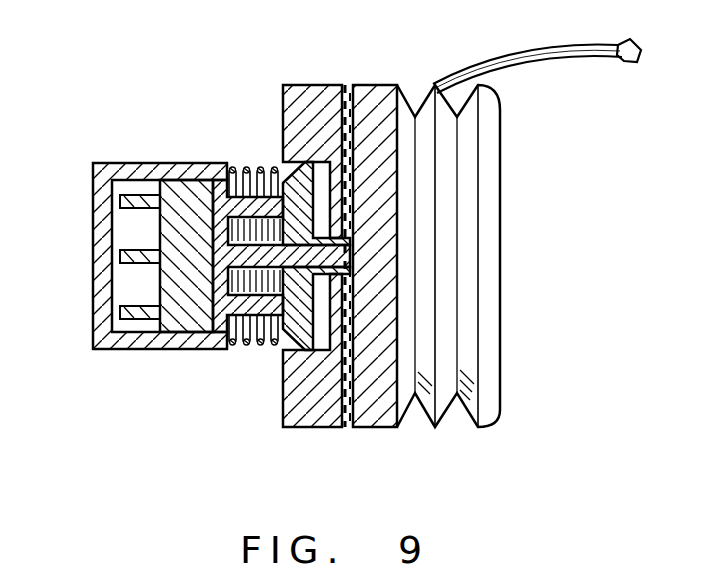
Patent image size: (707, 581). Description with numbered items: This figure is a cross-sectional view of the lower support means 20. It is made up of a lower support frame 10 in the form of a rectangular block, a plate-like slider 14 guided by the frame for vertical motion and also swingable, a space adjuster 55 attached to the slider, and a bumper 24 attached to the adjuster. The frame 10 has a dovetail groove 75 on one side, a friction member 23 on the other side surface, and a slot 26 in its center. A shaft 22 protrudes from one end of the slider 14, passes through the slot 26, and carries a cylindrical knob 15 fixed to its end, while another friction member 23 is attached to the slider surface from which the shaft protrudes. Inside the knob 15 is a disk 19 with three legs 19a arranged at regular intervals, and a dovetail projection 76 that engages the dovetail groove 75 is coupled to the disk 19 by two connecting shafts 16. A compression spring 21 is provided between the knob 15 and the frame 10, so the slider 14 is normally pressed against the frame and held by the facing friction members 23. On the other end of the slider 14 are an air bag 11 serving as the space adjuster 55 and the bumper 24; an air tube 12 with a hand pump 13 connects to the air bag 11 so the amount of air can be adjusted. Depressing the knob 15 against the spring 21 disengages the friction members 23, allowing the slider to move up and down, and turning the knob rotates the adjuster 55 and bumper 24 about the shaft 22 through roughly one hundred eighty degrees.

The lower support frame 10 is at (293, 96).
The air bag 11 is at (435, 428).
The air tube 12 is at (518, 52).
The hand pump 13 is at (636, 48).
The slider 14 is at (385, 92).
The knob 15 is at (102, 166).
The connecting shafts 16 is at (272, 280).
The disk 19 is at (125, 230).
The legs 19a is at (126, 265).
The lower support means 20 is at (187, 69).
The compression spring 21 is at (234, 348).
The shaft 22 is at (262, 342).
The friction members 23 is at (344, 100).
The bumper 24 is at (479, 278).
The slot 26 is at (325, 270).
The space adjuster 55 is at (471, 421).
The dovetail groove 75 is at (300, 165).
The dovetail projection 76 is at (302, 175).